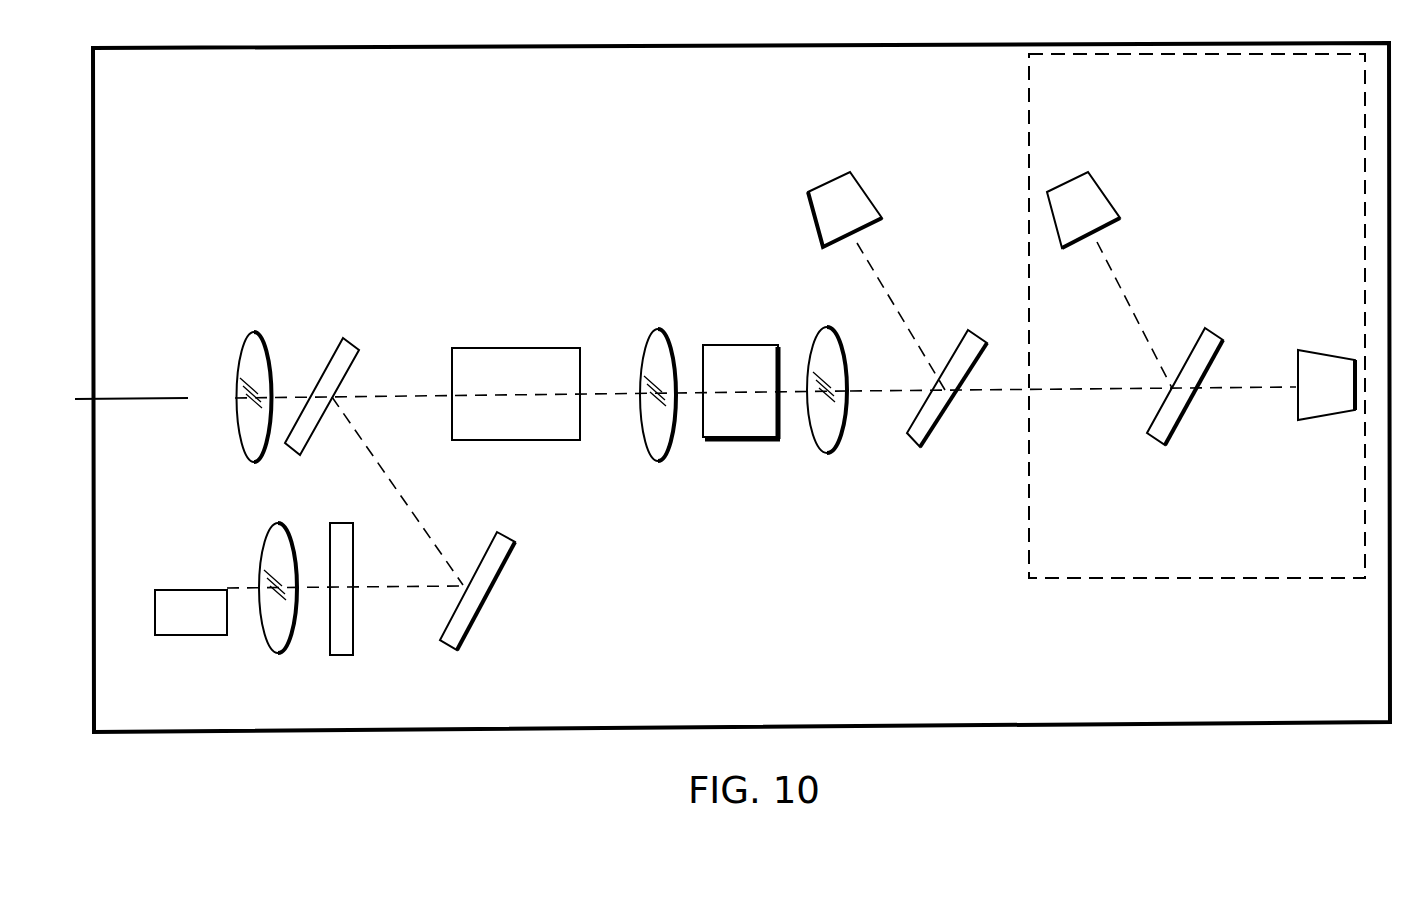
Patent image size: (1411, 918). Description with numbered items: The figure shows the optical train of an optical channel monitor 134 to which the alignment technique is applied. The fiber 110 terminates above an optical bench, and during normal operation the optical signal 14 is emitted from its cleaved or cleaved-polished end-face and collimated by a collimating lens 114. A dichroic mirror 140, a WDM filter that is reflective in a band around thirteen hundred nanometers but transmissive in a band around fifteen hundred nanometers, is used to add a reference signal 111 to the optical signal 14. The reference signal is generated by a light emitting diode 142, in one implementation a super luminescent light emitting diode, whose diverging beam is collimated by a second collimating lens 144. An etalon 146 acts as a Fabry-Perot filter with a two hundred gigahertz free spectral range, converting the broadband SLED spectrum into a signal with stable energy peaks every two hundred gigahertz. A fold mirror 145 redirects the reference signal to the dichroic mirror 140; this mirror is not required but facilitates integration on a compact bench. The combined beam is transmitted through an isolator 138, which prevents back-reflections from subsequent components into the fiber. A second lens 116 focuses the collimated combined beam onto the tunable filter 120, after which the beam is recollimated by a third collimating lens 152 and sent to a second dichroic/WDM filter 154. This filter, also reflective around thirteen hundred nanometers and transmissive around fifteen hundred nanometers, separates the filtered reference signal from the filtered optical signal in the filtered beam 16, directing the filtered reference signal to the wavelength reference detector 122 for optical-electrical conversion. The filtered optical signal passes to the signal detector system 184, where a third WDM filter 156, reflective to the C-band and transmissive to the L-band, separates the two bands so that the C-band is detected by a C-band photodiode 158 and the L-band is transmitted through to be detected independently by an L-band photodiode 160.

The optical channel monitor 134 is at (900, 654).
The signal detector system 184 is at (1029, 163).
The fiber 110 is at (157, 399).
The optical signal 14 is at (198, 397).
The filtered beam 16 is at (872, 391).
The collimating lens 114 is at (250, 341).
The dichroic mirror 140 is at (300, 455).
The isolator 138 is at (500, 440).
The lens #2 116 is at (641, 440).
The tunable filter 120 is at (737, 345).
The third collimating lens 152 is at (830, 325).
The second dichroic/WDM filter 154 is at (954, 351).
The wavelength reference detector 122 is at (815, 222).
The C-band photodiode 158 is at (1108, 196).
The third WDM filter 156 is at (1192, 350).
The L-band photodiode 160 is at (1318, 420).
The light emitting diode 142 is at (195, 635).
The reference signal 111 is at (400, 589).
The second collimating lens 144 is at (276, 528).
The etalon 146 is at (355, 552).
The fold mirror 145 is at (465, 632).